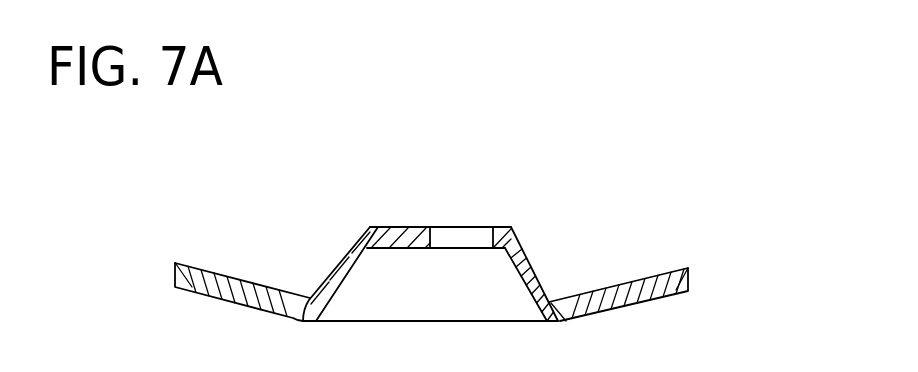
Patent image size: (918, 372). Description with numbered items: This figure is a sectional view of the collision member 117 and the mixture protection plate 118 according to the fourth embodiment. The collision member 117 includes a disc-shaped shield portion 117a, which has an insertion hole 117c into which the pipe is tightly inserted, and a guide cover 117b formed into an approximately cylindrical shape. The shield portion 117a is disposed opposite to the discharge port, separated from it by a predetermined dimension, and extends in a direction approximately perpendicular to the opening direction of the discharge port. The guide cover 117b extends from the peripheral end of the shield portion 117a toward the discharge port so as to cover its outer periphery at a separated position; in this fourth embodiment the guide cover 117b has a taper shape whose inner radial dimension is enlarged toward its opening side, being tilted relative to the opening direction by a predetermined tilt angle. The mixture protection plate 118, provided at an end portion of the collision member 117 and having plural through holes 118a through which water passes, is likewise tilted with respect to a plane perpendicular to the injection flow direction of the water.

The collision member 117 is at (440, 245).
The shield portion 117a is at (398, 227).
The guide cover 117b is at (537, 262).
The insertion hole 117c is at (480, 227).
The mixture protection plate 118 is at (475, 265).
The through holes 118a is at (665, 278).